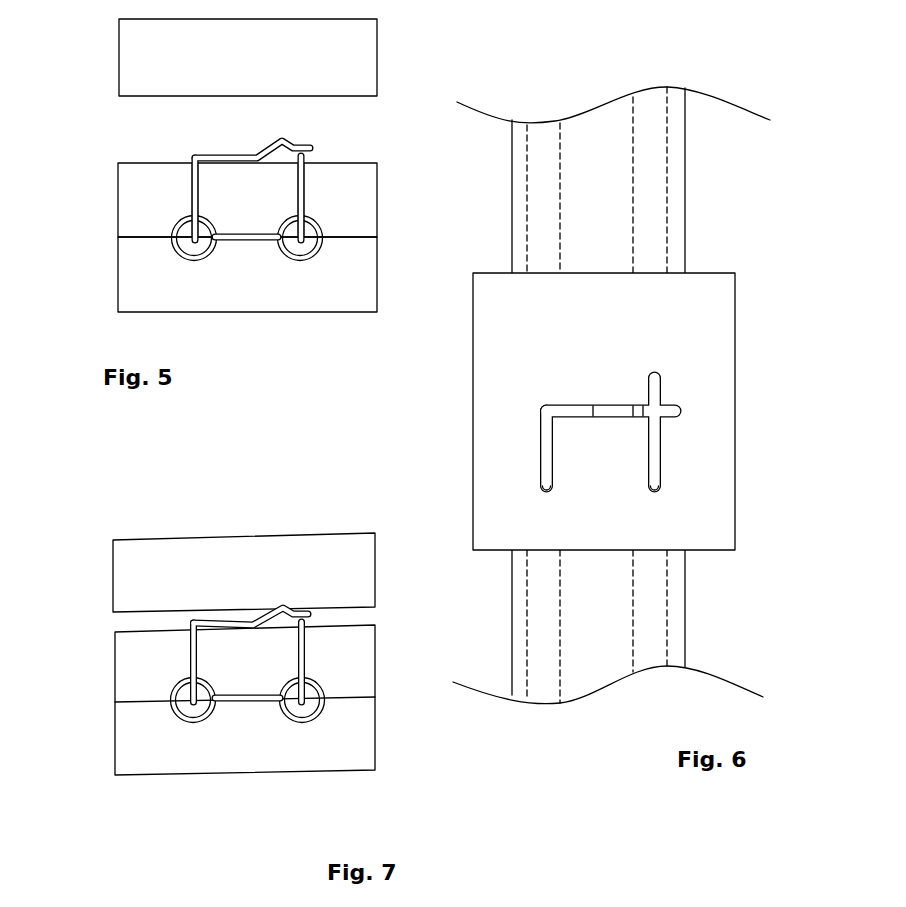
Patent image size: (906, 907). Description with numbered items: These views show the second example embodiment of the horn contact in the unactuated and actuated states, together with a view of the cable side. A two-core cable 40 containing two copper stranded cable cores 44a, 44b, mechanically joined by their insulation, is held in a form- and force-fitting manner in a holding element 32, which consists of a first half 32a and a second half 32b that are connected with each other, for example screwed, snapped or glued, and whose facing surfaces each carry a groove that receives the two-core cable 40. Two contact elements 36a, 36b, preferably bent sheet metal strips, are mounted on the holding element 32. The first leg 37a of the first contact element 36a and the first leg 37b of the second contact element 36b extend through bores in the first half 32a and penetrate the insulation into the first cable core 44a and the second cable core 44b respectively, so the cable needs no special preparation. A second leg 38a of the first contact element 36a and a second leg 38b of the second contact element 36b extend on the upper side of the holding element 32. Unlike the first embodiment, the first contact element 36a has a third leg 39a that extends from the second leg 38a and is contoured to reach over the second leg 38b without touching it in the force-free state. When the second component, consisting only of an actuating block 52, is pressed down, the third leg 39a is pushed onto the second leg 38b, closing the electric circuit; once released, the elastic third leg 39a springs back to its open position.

In FIG. 5, the actuating block 52 is at (352, 52).
In FIG. 7, the actuating block 52 is at (113, 583).
In FIG. 6, the holding element 32 is at (717, 475).
In FIG. 5, the first half 32a is at (360, 172).
In FIG. 5, the second half 32b is at (343, 300).
In FIG. 7, the second half 32b is at (378, 662).
In FIG. 5, the first contact element 36a is at (190, 183).
In FIG. 7, the first contact element 36a is at (187, 677).
In FIG. 5, the second contact element 36b is at (310, 192).
In FIG. 7, the second contact element 36b is at (307, 672).
In FIG. 5, the first leg 37a is at (195, 201).
In FIG. 7, the first leg 37a is at (187, 662).
In FIG. 5, the first leg 37b is at (303, 202).
In FIG. 7, the first leg 37b is at (310, 647).
In FIG. 6, the second leg 38a is at (542, 448).
In FIG. 6, the second leg 38b is at (663, 437).
In FIG. 5, the third leg 39a is at (258, 153).
In FIG. 6, the third leg 39a is at (578, 412).
In FIG. 7, the third leg 39a is at (222, 620).
In FIG. 6, the two-core cable 40 is at (612, 157).
In FIG. 5, the first cable core 44a is at (198, 248).
In FIG. 7, the first cable core 44a is at (190, 708).
In FIG. 5, the second cable core 44b is at (312, 243).
In FIG. 7, the second cable core 44b is at (302, 707).